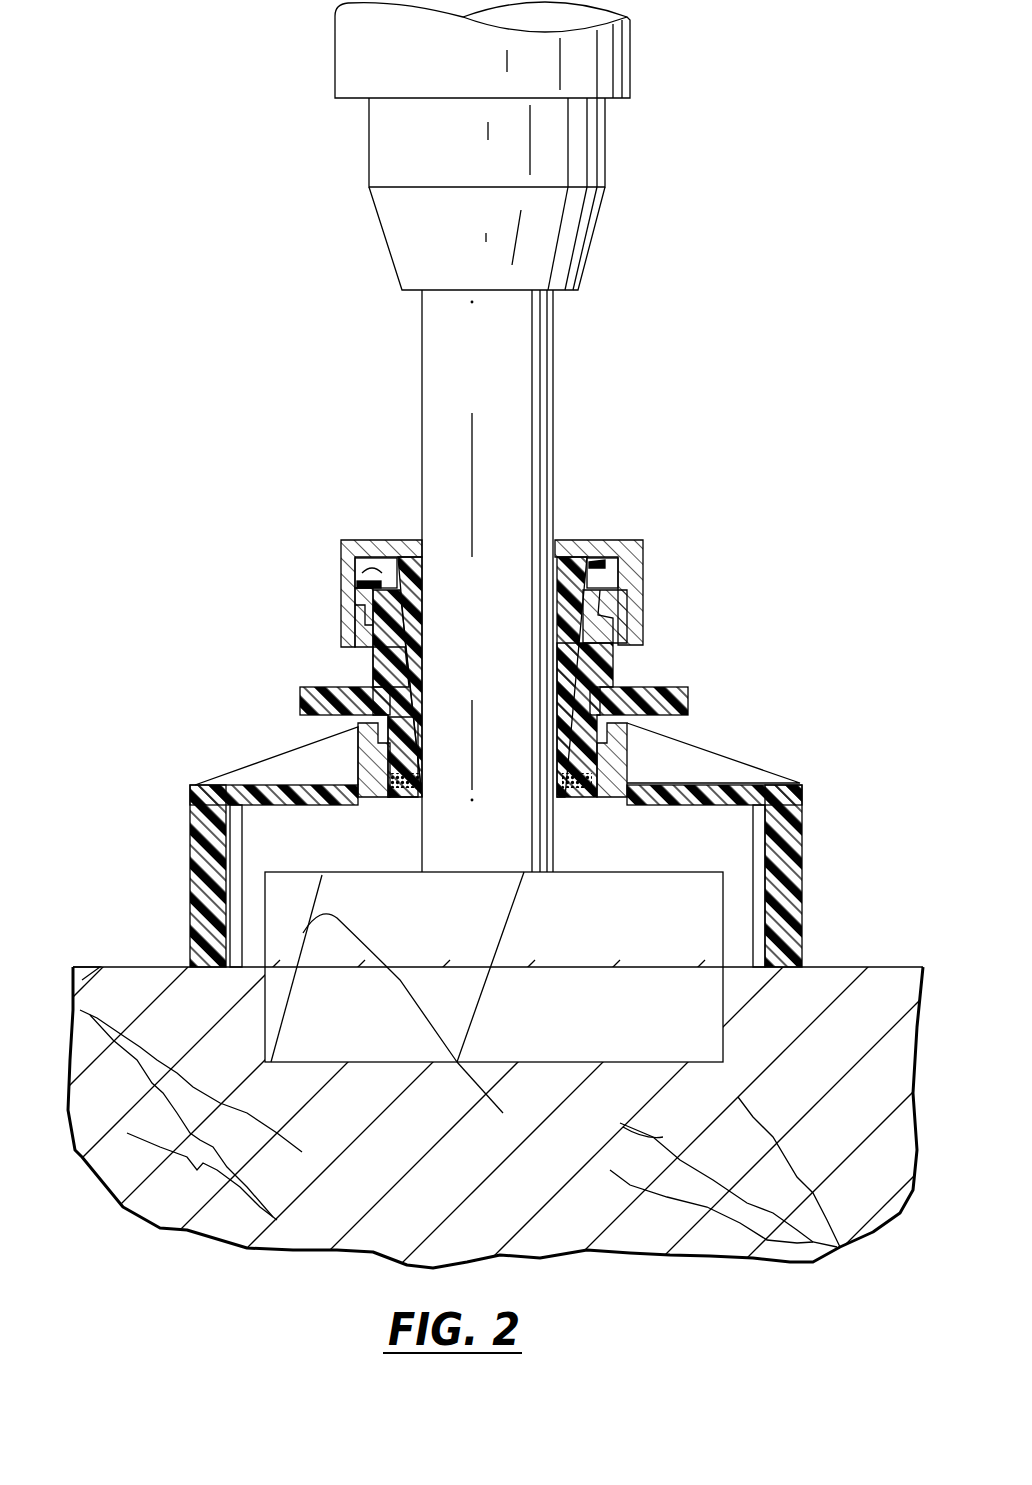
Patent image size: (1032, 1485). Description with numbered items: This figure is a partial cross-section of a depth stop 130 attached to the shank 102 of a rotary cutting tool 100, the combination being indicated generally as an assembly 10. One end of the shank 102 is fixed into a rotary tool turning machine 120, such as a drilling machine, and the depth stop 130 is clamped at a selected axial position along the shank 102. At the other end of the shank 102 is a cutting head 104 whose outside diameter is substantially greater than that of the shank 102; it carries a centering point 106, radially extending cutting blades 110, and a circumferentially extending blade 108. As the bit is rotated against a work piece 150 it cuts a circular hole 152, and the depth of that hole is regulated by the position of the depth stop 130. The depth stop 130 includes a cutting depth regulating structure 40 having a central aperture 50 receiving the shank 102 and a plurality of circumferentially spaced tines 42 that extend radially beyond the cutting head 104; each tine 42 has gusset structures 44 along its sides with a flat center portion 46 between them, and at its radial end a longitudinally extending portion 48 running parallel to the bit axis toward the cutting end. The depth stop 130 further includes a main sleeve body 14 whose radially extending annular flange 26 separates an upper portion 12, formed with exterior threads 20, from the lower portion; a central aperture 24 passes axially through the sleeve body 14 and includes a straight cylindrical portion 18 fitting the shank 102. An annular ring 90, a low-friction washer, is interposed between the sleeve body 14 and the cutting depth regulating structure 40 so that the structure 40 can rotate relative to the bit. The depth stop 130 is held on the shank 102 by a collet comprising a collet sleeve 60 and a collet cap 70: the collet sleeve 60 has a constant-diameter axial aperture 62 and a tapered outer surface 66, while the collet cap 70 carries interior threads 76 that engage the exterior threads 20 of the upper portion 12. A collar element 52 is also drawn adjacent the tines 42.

The combination of depth stop and rotary cutting tool 10 is at (640, 494).
The upper portion 12 is at (377, 655).
The main sleeve body 14 is at (634, 663).
The straight cylindrical portion 18 is at (426, 750).
The exterior threads 20 is at (366, 668).
The central aperture 24 is at (640, 610).
The radially extending annular flange 26 is at (302, 700).
The cutting depth regulating structure 40 is at (745, 762).
The tines 42 is at (195, 783).
The gusset structures 44 is at (247, 760).
The center portion 46 is at (645, 790).
The longitudinally extending portion 48 is at (240, 840).
The central aperture 50 is at (557, 793).
The collar 52 is at (600, 718).
The collet sleeve 60 is at (647, 560).
The axial aperture 62 is at (555, 578).
The outer surface 66 is at (365, 627).
The collet cap 70 is at (647, 538).
The interior threads 76 is at (372, 592).
The annular ring 90 is at (404, 796).
The rotary cutting tool 100 is at (557, 392).
The shank 102 is at (430, 430).
The cutting head 104 is at (675, 872).
The centering point 106 is at (502, 1113).
The circumferentially extending blade 108 is at (280, 1070).
The radially extending cutting blades 110 is at (457, 1065).
The rotary tool turning machine 120 is at (640, 92).
The depth stop 130 is at (660, 630).
The work piece 150 is at (850, 967).
The circular hole 152 is at (718, 1018).